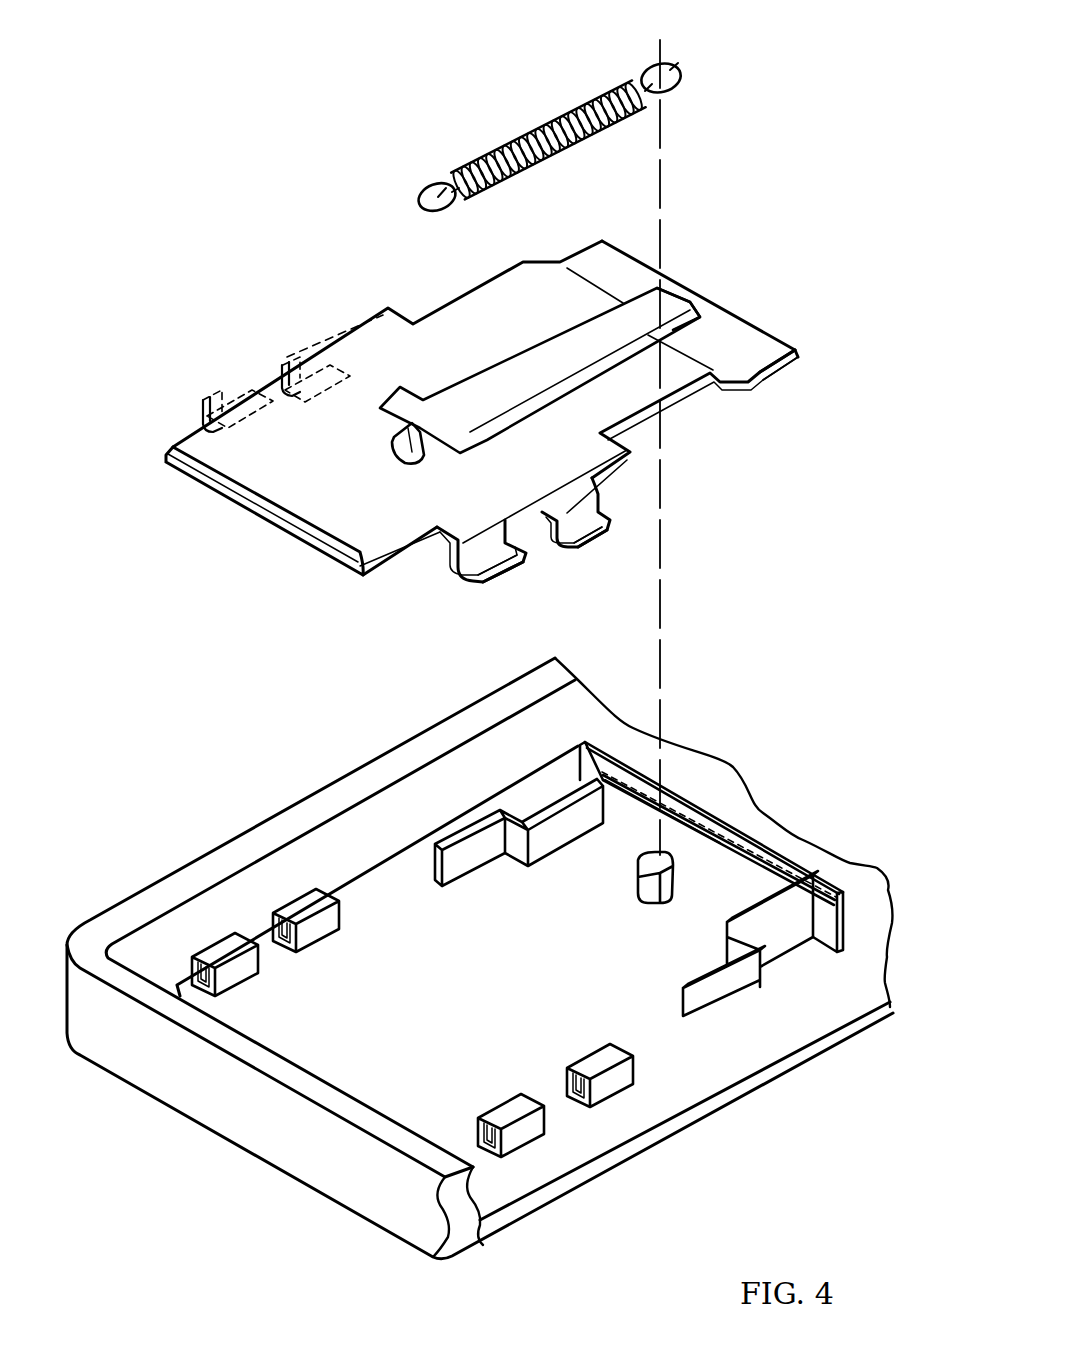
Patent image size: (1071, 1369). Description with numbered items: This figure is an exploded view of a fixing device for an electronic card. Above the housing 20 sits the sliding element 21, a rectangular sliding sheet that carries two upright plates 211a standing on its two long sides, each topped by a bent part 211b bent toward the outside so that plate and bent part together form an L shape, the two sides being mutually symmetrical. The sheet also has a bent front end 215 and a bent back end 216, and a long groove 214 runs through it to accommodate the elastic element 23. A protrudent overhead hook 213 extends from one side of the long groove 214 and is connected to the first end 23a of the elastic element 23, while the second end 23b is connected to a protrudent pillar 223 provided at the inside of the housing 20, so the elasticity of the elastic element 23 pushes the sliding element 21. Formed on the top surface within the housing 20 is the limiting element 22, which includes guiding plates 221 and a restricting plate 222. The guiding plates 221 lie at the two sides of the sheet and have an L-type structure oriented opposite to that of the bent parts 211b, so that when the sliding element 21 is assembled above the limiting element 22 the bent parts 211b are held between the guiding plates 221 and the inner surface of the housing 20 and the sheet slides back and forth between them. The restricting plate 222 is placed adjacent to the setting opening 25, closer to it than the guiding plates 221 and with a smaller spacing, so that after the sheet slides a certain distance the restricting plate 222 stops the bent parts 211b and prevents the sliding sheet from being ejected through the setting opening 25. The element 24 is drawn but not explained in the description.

The housing 20 is at (813, 1003).
The sliding element 21 is at (484, 395).
The limiting element 22 is at (450, 964).
The elastic element 23 is at (558, 115).
The first end of the elastic element 23a is at (436, 186).
The second end of the elastic element 23b is at (676, 68).
The sliding block 24 is at (773, 897).
The setting opening 25 is at (757, 834).
The upright plate 211a is at (287, 358).
The bent part 211b is at (283, 366).
The overhead hook 213 is at (423, 427).
The long groove 214 is at (668, 320).
The bent front end 215 is at (755, 350).
The bent back end 216 is at (228, 486).
The guiding plate 221 is at (303, 907).
The restricting plate 222 is at (440, 830).
The protrudent pillar 223 is at (567, 840).